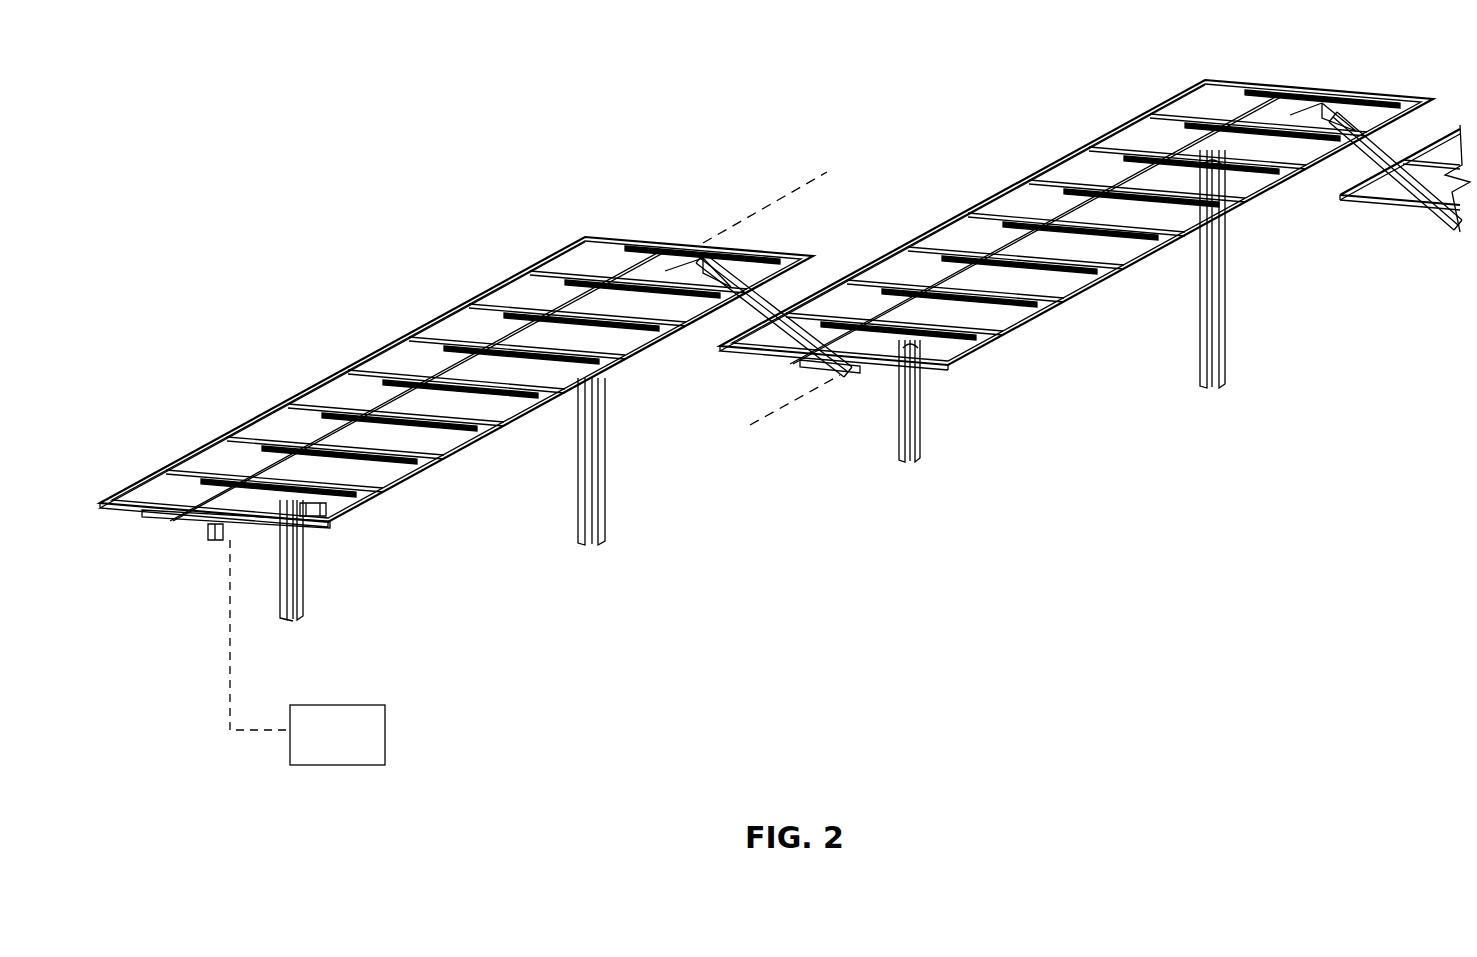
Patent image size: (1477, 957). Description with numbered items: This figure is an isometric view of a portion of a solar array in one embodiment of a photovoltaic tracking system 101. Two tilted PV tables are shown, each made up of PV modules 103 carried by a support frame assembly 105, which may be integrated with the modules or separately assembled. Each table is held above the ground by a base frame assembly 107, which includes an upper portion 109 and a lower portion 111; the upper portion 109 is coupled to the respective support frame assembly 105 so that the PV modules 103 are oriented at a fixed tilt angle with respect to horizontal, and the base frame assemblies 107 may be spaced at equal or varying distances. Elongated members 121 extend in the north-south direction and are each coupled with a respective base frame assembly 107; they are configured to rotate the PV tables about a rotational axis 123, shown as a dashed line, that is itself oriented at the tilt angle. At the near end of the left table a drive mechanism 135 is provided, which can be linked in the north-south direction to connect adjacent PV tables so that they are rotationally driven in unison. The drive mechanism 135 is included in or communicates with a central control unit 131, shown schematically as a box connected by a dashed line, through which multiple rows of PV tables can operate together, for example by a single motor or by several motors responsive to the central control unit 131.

The photovoltaic tracking system 101 is at (675, 210).
The PV module 103 is at (605, 248).
The support frame assembly 105 is at (498, 283).
The base frame assembly 107 is at (655, 517).
The upper portion 109 is at (208, 538).
The lower portion 111 is at (607, 457).
The elongated member 121 is at (745, 322).
The rotational axis 123 is at (810, 183).
The central control unit 131 is at (362, 745).
The drive mechanism 135 is at (330, 520).